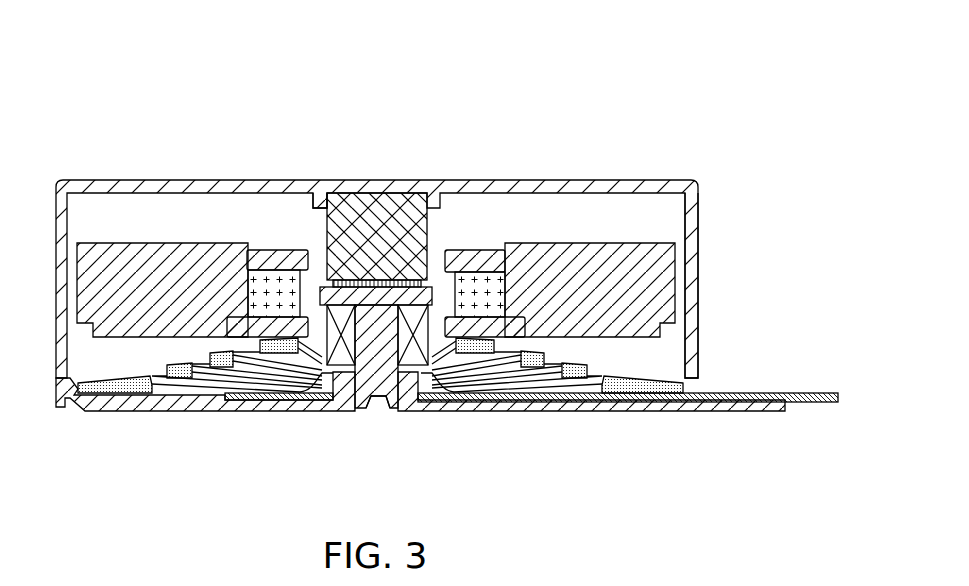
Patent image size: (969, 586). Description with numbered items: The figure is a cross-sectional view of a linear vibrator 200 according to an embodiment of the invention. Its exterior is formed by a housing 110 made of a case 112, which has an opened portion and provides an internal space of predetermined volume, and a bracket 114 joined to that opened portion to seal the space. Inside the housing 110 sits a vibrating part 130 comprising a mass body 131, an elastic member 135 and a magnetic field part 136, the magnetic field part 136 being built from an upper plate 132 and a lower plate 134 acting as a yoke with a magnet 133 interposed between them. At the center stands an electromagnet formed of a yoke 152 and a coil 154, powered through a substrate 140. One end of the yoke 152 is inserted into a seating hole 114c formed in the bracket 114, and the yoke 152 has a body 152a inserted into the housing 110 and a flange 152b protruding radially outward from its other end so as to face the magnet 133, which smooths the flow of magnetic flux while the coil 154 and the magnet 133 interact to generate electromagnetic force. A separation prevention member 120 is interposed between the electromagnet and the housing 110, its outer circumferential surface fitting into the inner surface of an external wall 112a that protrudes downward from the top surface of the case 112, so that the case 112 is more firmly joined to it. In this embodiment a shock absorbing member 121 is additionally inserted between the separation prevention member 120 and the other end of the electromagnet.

The linear vibrator 200 is at (147, 107).
The housing 110 is at (128, 478).
The case 112 is at (386, 275).
The external wall 112a is at (312, 203).
The bracket 114 is at (420, 425).
The seating hole 114c is at (391, 408).
The separation prevention member 120 is at (376, 266).
The shock absorbing member 121 is at (398, 283).
The vibrating part 130 is at (725, 60).
The mass body 131 is at (632, 258).
The upper plate 132 is at (472, 253).
The magnet 133 is at (495, 287).
The lower plate 134 is at (518, 327).
The elastic member 135 is at (688, 242).
The magnetic field part 136 is at (595, 115).
The substrate 140 is at (607, 402).
The yoke 152 is at (305, 486).
The body 152a is at (338, 392).
The flange 152b is at (285, 360).
The coil 154 is at (440, 376).